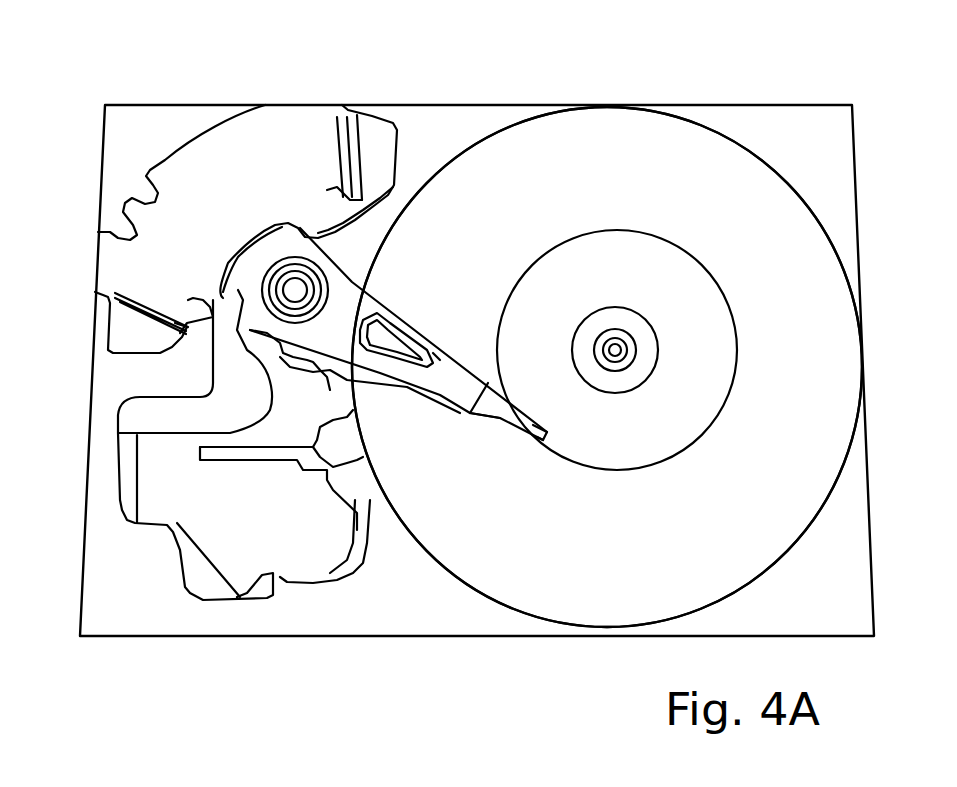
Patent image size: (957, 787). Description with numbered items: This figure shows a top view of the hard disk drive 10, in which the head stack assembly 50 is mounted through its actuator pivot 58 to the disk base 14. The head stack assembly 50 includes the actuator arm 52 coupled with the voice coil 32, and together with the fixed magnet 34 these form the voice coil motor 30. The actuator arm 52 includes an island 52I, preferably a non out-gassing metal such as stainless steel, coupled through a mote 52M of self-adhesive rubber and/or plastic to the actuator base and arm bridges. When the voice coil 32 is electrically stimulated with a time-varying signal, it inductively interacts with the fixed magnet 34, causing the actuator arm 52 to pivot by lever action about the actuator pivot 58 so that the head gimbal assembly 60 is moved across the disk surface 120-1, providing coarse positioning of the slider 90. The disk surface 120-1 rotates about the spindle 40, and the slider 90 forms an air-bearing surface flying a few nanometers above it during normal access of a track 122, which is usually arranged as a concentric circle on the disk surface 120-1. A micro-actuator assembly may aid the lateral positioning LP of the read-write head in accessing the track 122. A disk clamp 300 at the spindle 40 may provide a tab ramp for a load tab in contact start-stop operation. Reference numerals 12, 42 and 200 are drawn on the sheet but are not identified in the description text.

The hard disk drive 10 is at (53, 77).
The disk base 14 is at (102, 177).
The fixed magnet 34 is at (246, 352).
The voice coil 32 is at (287, 225).
The actuator pivot 58 is at (296, 290).
The actuator arm 52 is at (398, 334).
The mote 52M is at (417, 341).
The island 52I is at (433, 353).
The flex cable 200 is at (313, 367).
The head gimbal assembly 60 is at (497, 418).
The lateral positioning LP is at (543, 440).
The slider 90 is at (543, 438).
The disk 12 is at (607, 367).
The disk surface 120-1 is at (607, 367).
The track 122 is at (738, 336).
The spindle 40 is at (612, 350).
The spindle hub 42 is at (643, 318).
The disk clamp 300 is at (655, 358).
The head stack assembly 50 is at (117, 653).
The voice coil motor 30 is at (552, 715).